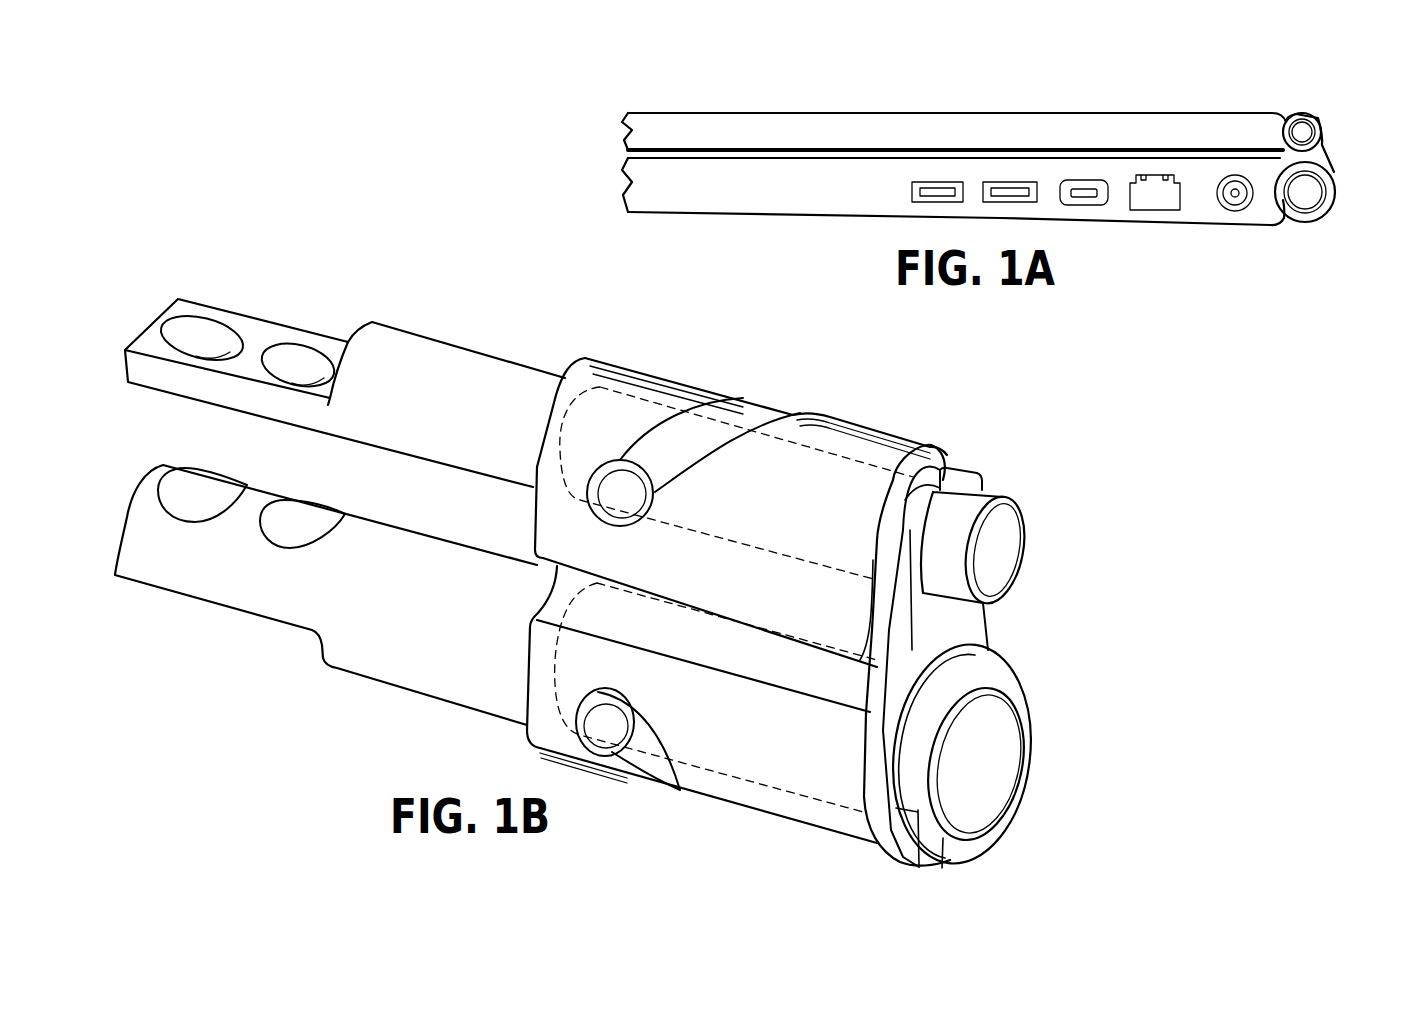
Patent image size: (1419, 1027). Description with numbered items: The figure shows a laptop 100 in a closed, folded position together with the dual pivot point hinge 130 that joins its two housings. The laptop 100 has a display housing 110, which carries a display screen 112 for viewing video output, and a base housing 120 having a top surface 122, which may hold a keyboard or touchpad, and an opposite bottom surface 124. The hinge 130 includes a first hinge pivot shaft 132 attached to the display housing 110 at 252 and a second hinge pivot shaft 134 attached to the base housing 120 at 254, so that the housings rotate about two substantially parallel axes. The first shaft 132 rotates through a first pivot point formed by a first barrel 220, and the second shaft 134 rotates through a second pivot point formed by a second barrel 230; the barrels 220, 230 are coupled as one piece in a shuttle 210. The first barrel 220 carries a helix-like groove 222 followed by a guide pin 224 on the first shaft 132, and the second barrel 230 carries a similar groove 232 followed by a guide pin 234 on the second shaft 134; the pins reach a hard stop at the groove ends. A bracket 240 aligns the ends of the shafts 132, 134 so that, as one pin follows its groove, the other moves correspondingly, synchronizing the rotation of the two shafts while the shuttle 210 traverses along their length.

In FIG. 1A, the laptop 100 is at (818, 78).
In FIG. 1A, the display housing 110 is at (678, 130).
In FIG. 1A, the display screen 112 is at (858, 162).
In FIG. 1A, the base housing 120 is at (676, 205).
In FIG. 1A, the top surface 122 is at (761, 148).
In FIG. 1A, the bottom surface 124 is at (787, 222).
In FIG. 1A, the dual pivot point hinge 130 is at (1332, 169).
In FIG. 1B, the dual pivot point hinge 130 is at (591, 570).
In FIG. 1A, the first hinge pivot shaft 132 is at (1302, 112).
In FIG. 1B, the first hinge pivot shaft 132 is at (1006, 556).
In FIG. 1A, the second hinge pivot shaft 134 is at (1305, 222).
In FIG. 1B, the second hinge pivot shaft 134 is at (1010, 768).
In FIG. 1B, the shuttle 210 is at (683, 378).
In FIG. 1B, the first barrel 220 is at (560, 436).
In FIG. 1B, the groove 222 is at (744, 410).
In FIG. 1B, the guide pin 224 is at (613, 488).
In FIG. 1B, the second barrel 230 is at (545, 661).
In FIG. 1B, the groove 232 is at (650, 773).
In FIG. 1B, the guide pin 234 is at (610, 722).
In FIG. 1B, the bracket 240 is at (972, 622).
In FIG. 1B, the attachment of first hinge pivot shaft to display housing 252 is at (262, 330).
In FIG. 1B, the attachment of second hinge pivot shaft to base housing 254 is at (178, 594).